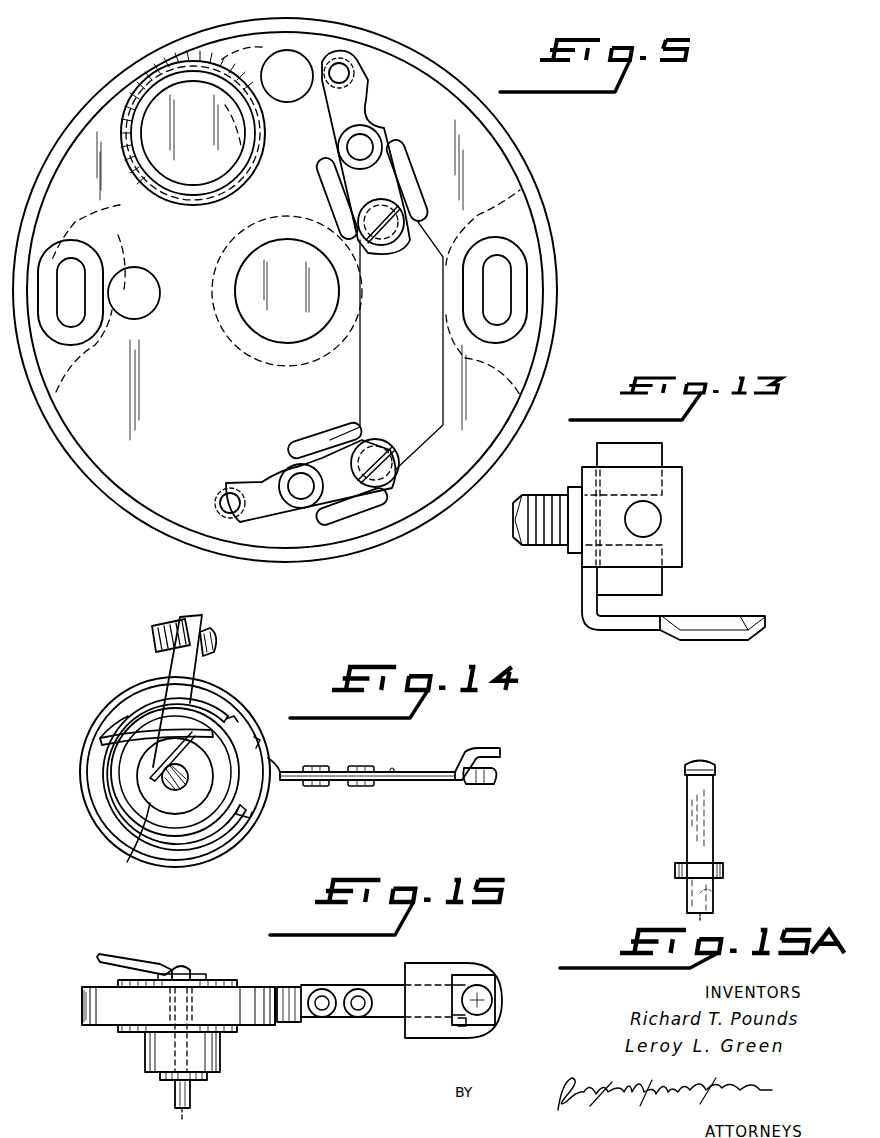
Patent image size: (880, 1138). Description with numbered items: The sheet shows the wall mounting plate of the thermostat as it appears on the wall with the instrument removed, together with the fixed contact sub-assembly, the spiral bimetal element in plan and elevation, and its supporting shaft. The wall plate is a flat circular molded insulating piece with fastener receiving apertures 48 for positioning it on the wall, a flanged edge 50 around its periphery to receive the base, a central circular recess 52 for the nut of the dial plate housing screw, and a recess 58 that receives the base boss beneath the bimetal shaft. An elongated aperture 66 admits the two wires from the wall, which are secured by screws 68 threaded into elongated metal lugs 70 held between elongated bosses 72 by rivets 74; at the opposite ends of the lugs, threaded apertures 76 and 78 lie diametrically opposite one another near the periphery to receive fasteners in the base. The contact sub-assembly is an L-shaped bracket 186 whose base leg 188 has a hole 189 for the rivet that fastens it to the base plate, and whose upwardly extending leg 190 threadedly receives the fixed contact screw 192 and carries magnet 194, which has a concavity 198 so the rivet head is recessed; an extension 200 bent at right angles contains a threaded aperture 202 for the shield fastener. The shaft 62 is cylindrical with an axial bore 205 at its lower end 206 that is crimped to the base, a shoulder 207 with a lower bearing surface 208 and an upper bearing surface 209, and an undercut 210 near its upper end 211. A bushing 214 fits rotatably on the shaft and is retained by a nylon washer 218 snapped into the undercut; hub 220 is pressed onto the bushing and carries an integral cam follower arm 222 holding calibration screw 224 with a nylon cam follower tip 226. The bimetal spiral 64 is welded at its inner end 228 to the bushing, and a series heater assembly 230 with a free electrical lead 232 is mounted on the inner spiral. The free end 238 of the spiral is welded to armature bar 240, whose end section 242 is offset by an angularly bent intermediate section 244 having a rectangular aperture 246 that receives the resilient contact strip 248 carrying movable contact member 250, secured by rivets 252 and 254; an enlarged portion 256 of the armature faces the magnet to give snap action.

In FIG. 5, the fastener receiving apertures 48 is at (74, 262).
In FIG. 5, the flanged edge 50 is at (68, 432).
In FIG. 5, the central circular recess 52 is at (298, 279).
In FIG. 5, the recess 58 is at (202, 157).
In FIG. 14, the shaft 62 is at (176, 768).
In FIG. 15, the shaft 62 is at (178, 968).
In FIG. 15A, the shaft 62 is at (724, 810).
In FIG. 14, the bimetal spiral 64 is at (96, 822).
In FIG. 15, the bimetal spiral 64 is at (98, 1022).
In FIG. 5, the elongated aperture 66 is at (358, 376).
In FIG. 5, the screws 68 is at (376, 208).
In FIG. 5, the elongated metal lugs 70 is at (384, 160).
In FIG. 5, the elongated bosses 72 is at (410, 176).
In FIG. 5, the rivets 74 is at (368, 134).
In FIG. 5, the threaded aperture 76 is at (351, 64).
In FIG. 5, the threaded aperture 78 is at (226, 496).
In FIG. 13, the bracket 186 is at (568, 612).
In FIG. 13, the base leg 188 is at (626, 626).
In FIG. 13, the hole 189 is at (718, 622).
In FIG. 13, the upwardly extending leg 190 is at (582, 582).
In FIG. 13, the fixed contact screw 192 is at (536, 494).
In FIG. 13, the magnet 194 is at (662, 452).
In FIG. 13, the concavity 198 is at (680, 548).
In FIG. 13, the extension 200 is at (674, 483).
In FIG. 13, the threaded aperture 202 is at (660, 525).
In FIG. 15, the axial bore 205 is at (187, 1123).
In FIG. 15A, the axial bore 205 is at (708, 920).
In FIG. 15, the lower end 206 is at (172, 1096).
In FIG. 15A, the shoulder 207 is at (730, 874).
In FIG. 15A, the lower bearing surface 208 is at (726, 878).
In FIG. 15A, the upper bearing surface 209 is at (722, 866).
In FIG. 15A, the undercut 210 is at (714, 772).
In FIG. 15A, the upper end 211 is at (703, 763).
In FIG. 14, the bushing 214 is at (172, 784).
In FIG. 15, the bushing 214 is at (196, 1052).
In FIG. 15, the nylon washer 218 is at (196, 974).
In FIG. 14, the hub 220 is at (132, 862).
In FIG. 15, the hub 220 is at (148, 1060).
In FIG. 14, the cam follower arm 222 is at (178, 660).
In FIG. 14, the calibration screw 224 is at (166, 622).
In FIG. 14, the cam follower tip 226 is at (214, 638).
In FIG. 14, the inner end 228 is at (122, 765).
In FIG. 14, the series heater assembly 230 is at (118, 764).
In FIG. 15, the series heater assembly 230 is at (222, 978).
In FIG. 14, the electrical lead 232 is at (106, 740).
In FIG. 15, the electrical lead 232 is at (100, 956).
In FIG. 14, the free end 238 is at (294, 766).
In FIG. 15, the free end 238 is at (276, 986).
In FIG. 14, the armature bar 240 is at (359, 798).
In FIG. 15, the armature bar 240 is at (382, 984).
In FIG. 14, the end section 242 is at (484, 752).
In FIG. 15, the end section 242 is at (486, 970).
In FIG. 14, the intermediate section 244 is at (474, 741).
In FIG. 15, the intermediate section 244 is at (460, 964).
In FIG. 15, the rectangular aperture 246 is at (464, 1028).
In FIG. 14, the contact strip 248 is at (388, 781).
In FIG. 14, the movable contact member 250 is at (496, 784).
In FIG. 15, the movable contact member 250 is at (492, 998).
In FIG. 14, the rivet 252 is at (366, 766).
In FIG. 15, the rivet 252 is at (358, 1020).
In FIG. 14, the rivet 254 is at (326, 766).
In FIG. 15, the rivet 254 is at (320, 1020).
In FIG. 15, the enlarged portion 256 is at (424, 1040).